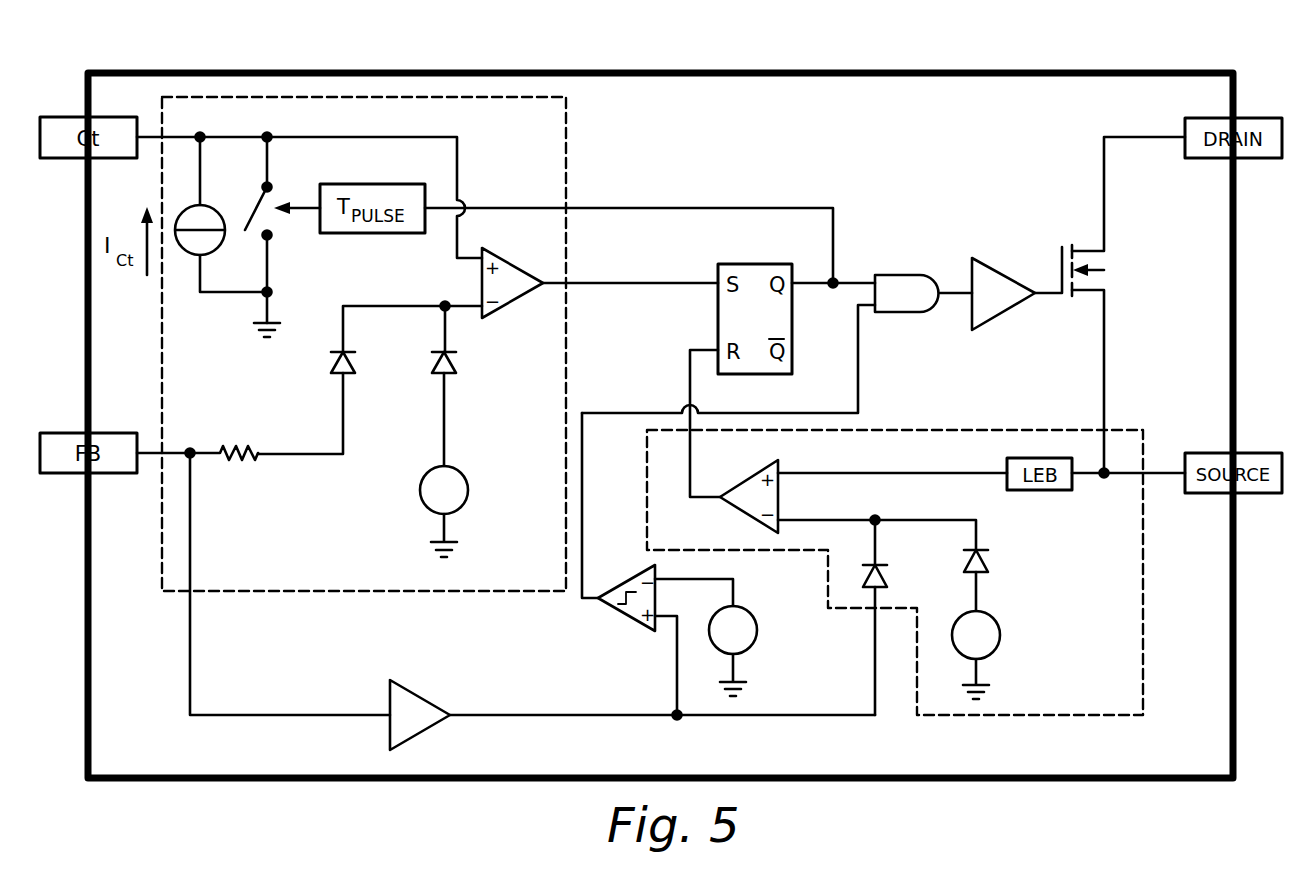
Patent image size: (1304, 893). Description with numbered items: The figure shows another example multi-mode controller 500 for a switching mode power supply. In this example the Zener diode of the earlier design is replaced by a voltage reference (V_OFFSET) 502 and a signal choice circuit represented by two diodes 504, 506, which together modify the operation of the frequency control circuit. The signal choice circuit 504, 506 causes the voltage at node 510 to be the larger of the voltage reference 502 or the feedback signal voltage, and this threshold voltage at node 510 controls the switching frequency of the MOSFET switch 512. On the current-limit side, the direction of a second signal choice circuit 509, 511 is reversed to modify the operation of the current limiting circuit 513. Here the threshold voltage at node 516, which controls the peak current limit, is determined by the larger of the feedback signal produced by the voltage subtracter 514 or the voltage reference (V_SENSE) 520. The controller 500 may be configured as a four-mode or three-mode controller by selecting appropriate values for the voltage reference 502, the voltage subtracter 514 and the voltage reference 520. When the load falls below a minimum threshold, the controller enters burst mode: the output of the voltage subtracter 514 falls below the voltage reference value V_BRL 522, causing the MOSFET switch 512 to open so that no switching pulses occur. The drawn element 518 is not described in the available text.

The multi-mode controller 500 is at (920, 46).
The voltage reference (V_OFFSET) 502 is at (420, 485).
The diode 504 is at (455, 358).
The diode 506 is at (330, 363).
The signal choice circuit diode 509 is at (990, 560).
The node 510 is at (445, 306).
The signal choice circuit diode 511 is at (886, 570).
The MOSFET switch 512 is at (1060, 262).
The current limiting circuit 513 is at (933, 430).
The voltage subtracter 514 is at (424, 700).
The node 516 is at (876, 519).
The current source and switch 518 is at (217, 250).
The voltage reference (V_SENSE) 520 is at (998, 615).
The voltage reference value (V_BRL) 522 is at (750, 652).